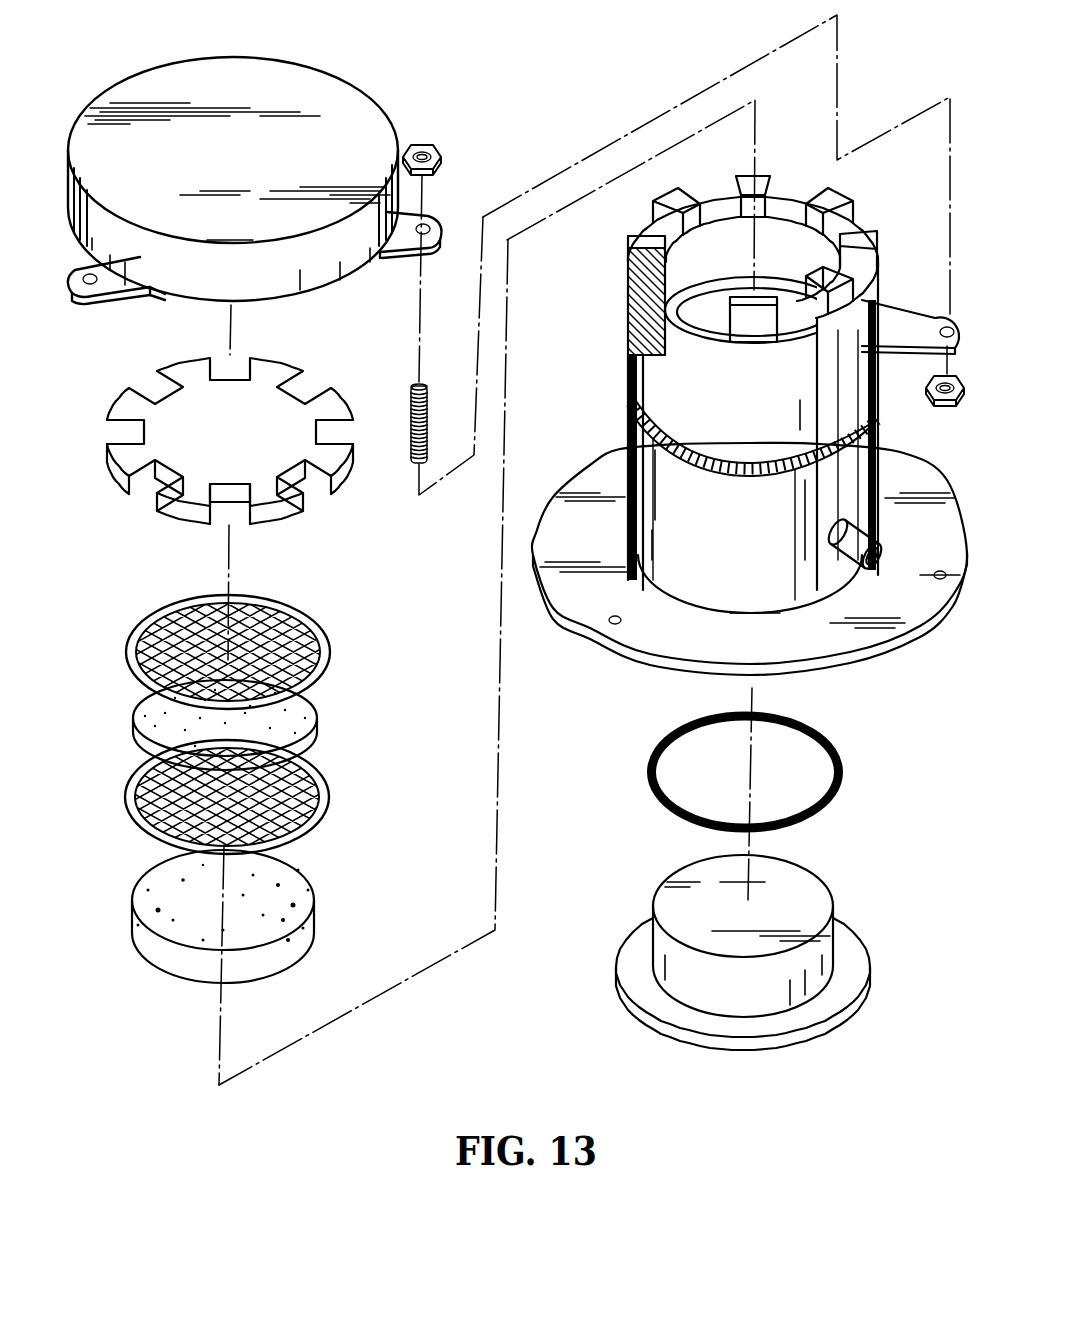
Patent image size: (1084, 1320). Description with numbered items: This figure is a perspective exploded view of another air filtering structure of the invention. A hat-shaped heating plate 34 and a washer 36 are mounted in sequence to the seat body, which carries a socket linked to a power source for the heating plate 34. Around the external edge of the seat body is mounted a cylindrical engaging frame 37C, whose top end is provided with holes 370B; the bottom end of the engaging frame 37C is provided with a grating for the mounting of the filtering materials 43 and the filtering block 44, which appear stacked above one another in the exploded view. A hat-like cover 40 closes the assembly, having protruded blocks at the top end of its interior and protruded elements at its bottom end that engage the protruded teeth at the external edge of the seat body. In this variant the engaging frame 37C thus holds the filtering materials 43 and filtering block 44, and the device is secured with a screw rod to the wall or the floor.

The hat-like cover 40 is at (343, 93).
The filtering materials 43 is at (318, 722).
The filtering block 44 is at (307, 897).
The filter housing 370B is at (796, 179).
The cylindrical engaging frame 37C is at (645, 380).
The washer 36 is at (845, 775).
The hat-shaped heating plate 34 is at (822, 892).